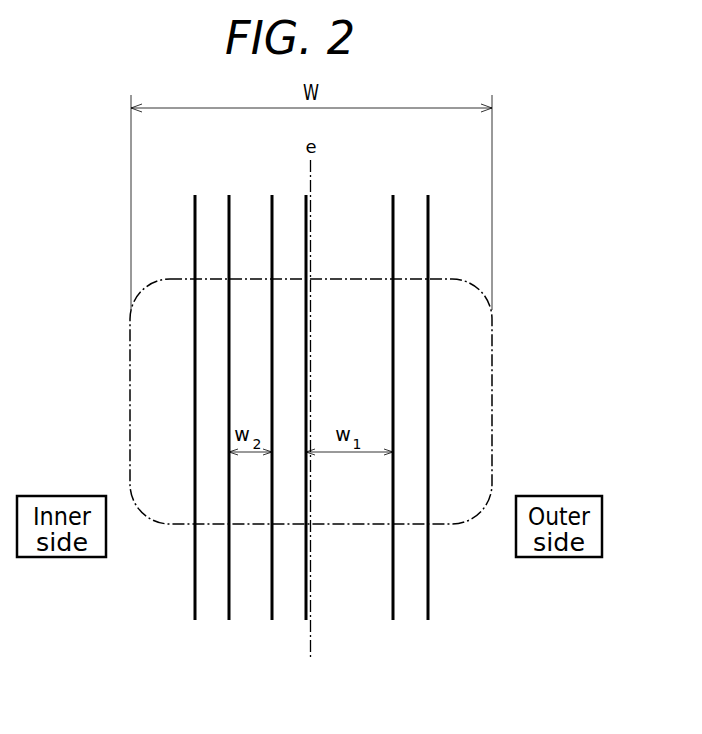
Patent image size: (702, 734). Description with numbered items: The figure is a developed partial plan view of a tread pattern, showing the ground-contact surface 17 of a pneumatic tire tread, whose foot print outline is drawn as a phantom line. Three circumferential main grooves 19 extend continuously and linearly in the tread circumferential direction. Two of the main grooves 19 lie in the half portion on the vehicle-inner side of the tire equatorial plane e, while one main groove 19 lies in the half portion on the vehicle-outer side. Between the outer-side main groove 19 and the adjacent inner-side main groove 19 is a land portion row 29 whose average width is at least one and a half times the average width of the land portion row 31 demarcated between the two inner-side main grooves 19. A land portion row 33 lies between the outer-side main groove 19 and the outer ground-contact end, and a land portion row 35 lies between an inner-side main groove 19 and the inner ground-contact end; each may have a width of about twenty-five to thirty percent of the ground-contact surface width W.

The ground-contact surface 17 is at (341, 540).
The circumferential main groove 19 is at (212, 362).
The land portion row 29 is at (348, 308).
The land portion row 31 is at (248, 308).
The land portion row 33 is at (452, 315).
The land portion row 35 is at (165, 308).